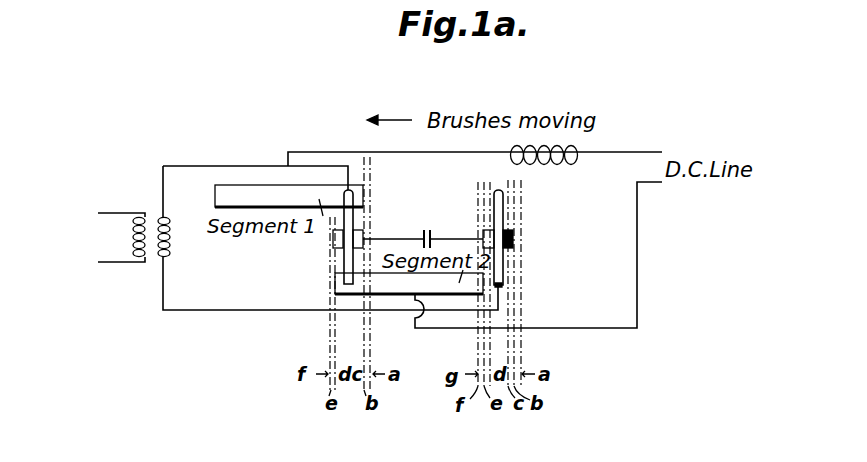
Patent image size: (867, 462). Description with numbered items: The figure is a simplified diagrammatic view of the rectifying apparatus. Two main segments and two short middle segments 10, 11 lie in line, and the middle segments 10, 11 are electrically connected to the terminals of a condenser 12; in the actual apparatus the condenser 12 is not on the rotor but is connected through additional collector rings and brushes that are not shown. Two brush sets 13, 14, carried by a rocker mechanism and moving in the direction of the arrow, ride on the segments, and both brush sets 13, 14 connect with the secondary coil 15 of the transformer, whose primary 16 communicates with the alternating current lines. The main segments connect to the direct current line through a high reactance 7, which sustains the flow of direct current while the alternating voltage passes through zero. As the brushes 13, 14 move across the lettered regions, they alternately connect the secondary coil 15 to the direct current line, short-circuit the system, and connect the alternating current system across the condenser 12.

The high reactance 7 is at (552, 164).
The middle segment 10 is at (336, 240).
The middle segment 11 is at (513, 238).
The condenser 12 is at (426, 229).
The brush set 13 is at (350, 221).
The brush set 14 is at (497, 190).
The secondary coil 15 is at (170, 238).
The primary 16 is at (133, 240).